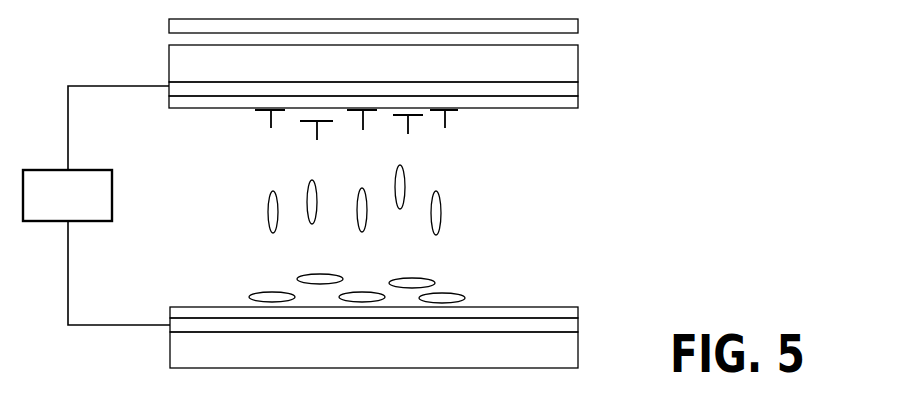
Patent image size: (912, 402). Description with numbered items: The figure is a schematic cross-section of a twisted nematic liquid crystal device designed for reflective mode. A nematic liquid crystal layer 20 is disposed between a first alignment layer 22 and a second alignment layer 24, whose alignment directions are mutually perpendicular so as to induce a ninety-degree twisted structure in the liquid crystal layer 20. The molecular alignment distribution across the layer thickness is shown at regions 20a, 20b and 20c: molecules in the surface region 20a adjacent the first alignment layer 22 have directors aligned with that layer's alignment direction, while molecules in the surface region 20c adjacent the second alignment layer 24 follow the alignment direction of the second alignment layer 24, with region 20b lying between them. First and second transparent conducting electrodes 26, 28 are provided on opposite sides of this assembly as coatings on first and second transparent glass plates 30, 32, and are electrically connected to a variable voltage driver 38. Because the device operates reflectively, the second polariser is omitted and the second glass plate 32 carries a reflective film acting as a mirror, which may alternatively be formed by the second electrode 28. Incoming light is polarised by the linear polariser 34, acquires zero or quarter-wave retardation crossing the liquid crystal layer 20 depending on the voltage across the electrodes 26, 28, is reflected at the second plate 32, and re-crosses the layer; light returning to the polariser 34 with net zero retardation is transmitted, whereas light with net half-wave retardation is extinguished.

The nematic liquid crystal layer 20 is at (443, 208).
The surface region 20a is at (478, 110).
The region 20b is at (478, 170).
The surface region 20c is at (390, 285).
The first alignment layer 22 is at (185, 104).
The second alignment layer 24 is at (574, 315).
The first transparent conducting electrode 26 is at (572, 90).
The second transparent conducting electrode 28 is at (578, 327).
The first transparent glass plate 30 is at (568, 68).
The second transparent glass plate 32 is at (570, 359).
The first linear polariser 34 is at (578, 26).
The variable voltage driver 38 is at (49, 216).